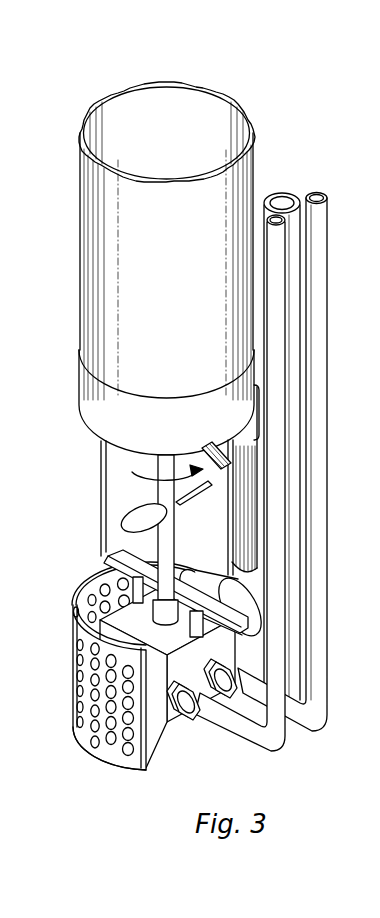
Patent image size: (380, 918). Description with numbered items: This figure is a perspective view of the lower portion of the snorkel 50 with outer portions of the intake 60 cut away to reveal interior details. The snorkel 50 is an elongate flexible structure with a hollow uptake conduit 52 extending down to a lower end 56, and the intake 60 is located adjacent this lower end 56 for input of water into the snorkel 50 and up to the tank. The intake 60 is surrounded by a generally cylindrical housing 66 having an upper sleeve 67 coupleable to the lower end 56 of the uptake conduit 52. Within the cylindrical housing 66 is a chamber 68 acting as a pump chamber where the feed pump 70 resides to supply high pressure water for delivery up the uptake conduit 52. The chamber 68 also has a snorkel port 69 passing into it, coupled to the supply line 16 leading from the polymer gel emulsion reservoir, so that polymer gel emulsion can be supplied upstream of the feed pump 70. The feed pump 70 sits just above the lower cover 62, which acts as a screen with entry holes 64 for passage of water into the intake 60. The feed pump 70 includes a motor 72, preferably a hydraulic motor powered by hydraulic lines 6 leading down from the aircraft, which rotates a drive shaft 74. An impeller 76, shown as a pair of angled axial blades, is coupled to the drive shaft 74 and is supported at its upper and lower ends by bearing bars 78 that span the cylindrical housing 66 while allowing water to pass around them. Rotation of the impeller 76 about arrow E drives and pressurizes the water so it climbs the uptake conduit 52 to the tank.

The snorkel 50 is at (64, 126).
The uptake conduit 52 is at (173, 146).
The supply line 16 is at (328, 290).
The lower end 56 is at (88, 340).
The upper sleeve 67 is at (98, 402).
The bearing bars 78 is at (212, 455).
The cylindrical housing 66 is at (100, 446).
The arrow E is at (132, 478).
The drive shaft 74 is at (155, 494).
The impeller 76 is at (212, 486).
The feed pump 70 is at (110, 516).
The chamber 68 is at (221, 526).
The snorkel port 69 is at (218, 574).
The intake 60 is at (41, 588).
The lower cover 62 is at (87, 743).
The entry holes 64 is at (125, 765).
The motor 72 is at (157, 703).
The hydraulic lines 6 is at (320, 728).